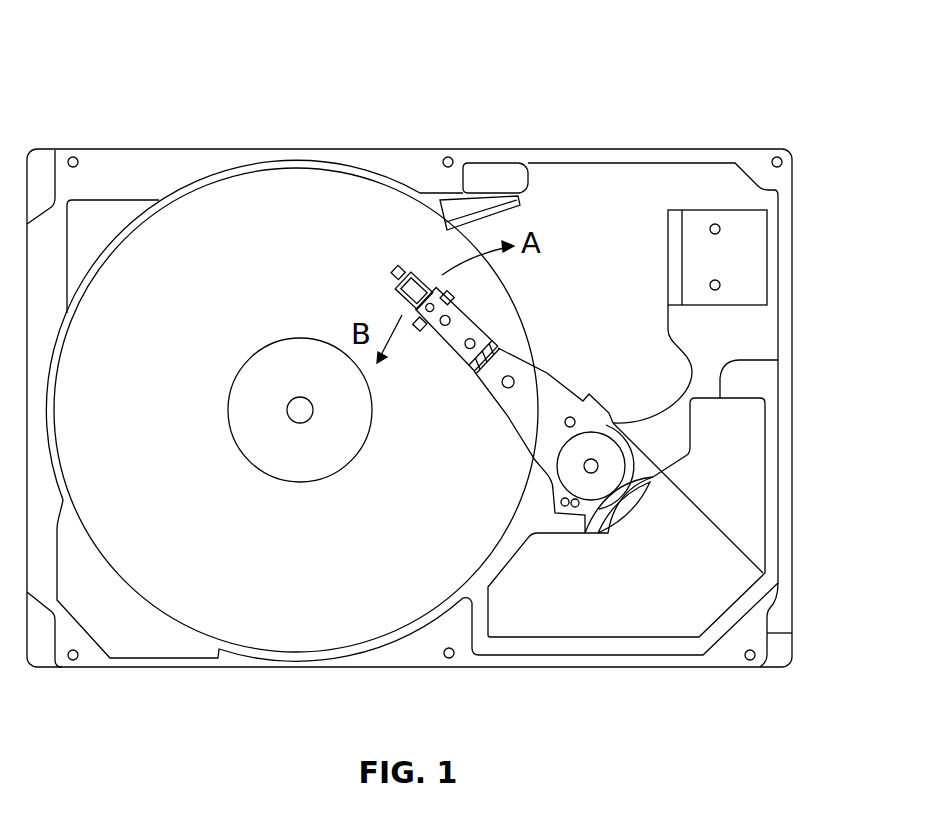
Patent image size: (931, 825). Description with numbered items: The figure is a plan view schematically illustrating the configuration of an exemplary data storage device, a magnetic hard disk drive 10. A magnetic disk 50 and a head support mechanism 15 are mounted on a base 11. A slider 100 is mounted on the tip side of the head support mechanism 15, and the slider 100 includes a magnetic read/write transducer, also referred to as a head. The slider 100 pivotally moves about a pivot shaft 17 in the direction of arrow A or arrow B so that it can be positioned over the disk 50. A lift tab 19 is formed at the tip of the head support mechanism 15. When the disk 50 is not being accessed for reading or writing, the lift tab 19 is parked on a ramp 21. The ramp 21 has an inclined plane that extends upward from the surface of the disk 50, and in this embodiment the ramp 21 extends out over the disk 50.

The magnetic hard disk drive 10 is at (118, 59).
The base 11 is at (627, 183).
The ramp 21 is at (505, 180).
The magnetic disk 50 is at (278, 587).
The head support mechanism 15 is at (482, 411).
The pivot shaft 17 is at (600, 466).
The slider 100 is at (421, 277).
The lift tab 19 is at (395, 273).